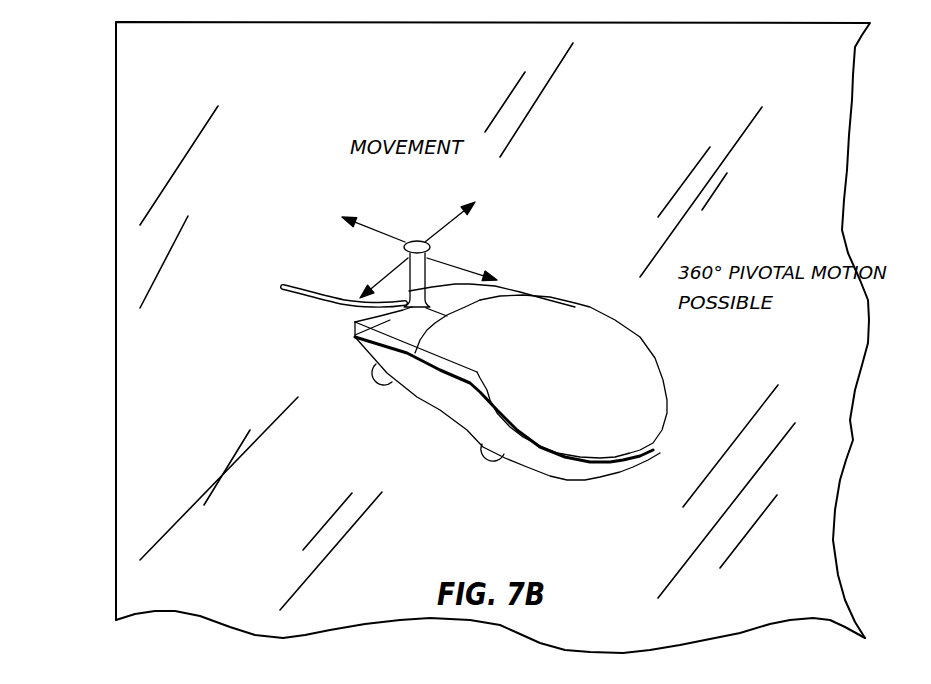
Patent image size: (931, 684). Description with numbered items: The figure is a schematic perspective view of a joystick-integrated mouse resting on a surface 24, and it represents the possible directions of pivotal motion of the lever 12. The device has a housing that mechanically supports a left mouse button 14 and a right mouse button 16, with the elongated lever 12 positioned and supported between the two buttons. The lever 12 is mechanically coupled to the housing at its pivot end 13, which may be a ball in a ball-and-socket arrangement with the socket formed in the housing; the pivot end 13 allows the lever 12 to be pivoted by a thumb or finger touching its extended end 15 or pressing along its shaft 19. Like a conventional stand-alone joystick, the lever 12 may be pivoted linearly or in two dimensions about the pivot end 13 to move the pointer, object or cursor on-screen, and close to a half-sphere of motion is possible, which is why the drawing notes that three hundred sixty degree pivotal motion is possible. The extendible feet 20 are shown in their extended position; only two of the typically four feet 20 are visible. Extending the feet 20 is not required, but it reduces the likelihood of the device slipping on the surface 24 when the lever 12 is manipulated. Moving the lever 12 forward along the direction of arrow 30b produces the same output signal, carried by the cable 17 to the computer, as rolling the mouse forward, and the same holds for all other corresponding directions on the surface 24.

The lever 12 is at (458, 254).
The pivot end 13 is at (377, 336).
The button 14 is at (471, 400).
The extended end 15 is at (439, 212).
The button 16 is at (538, 364).
The cable 17 is at (324, 274).
The shaft 19 is at (371, 275).
The feet 20 is at (404, 436).
The surface 24 is at (452, 337).
The arrow 30b is at (356, 207).